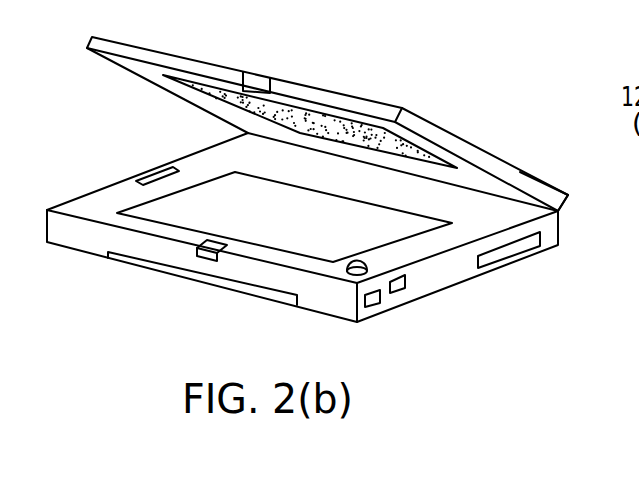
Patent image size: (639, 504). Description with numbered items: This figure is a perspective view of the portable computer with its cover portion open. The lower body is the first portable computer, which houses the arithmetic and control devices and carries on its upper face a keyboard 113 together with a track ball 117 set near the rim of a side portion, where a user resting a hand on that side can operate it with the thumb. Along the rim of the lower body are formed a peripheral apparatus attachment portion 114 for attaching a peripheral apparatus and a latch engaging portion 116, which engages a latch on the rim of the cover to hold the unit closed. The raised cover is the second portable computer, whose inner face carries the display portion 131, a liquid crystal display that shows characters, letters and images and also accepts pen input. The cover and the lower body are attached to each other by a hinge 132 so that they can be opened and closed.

The keyboard 113 is at (158, 213).
The peripheral apparatus attachment portion 114 is at (152, 174).
The latch engaging portion 116 is at (193, 253).
The track ball 117 is at (371, 259).
The display portion 131 is at (318, 130).
The hinge 132 is at (566, 213).